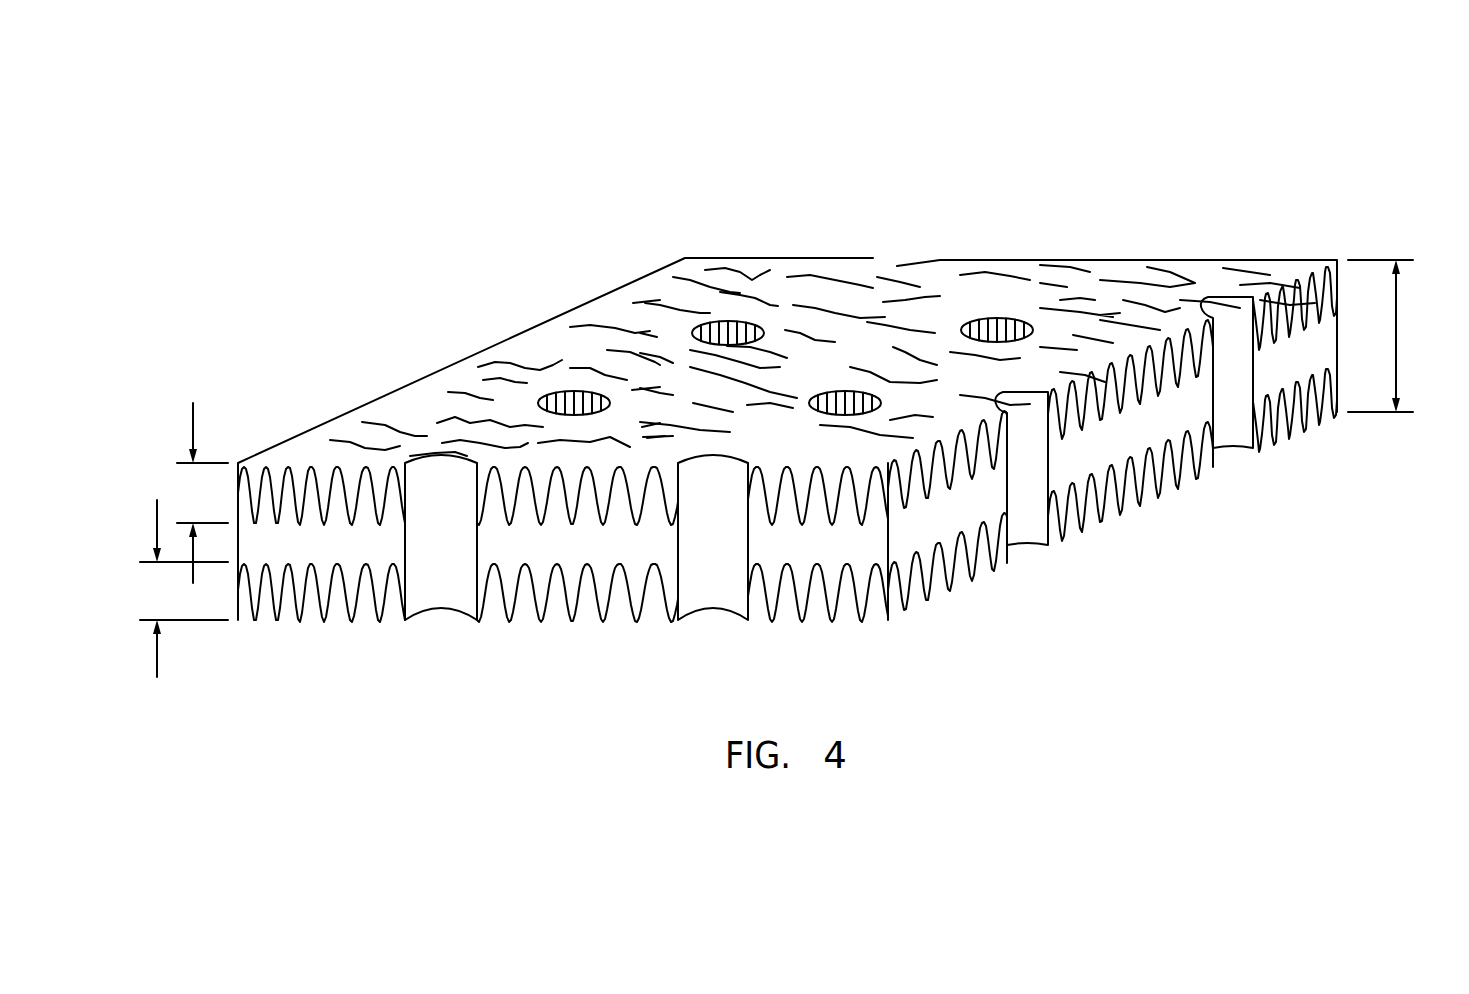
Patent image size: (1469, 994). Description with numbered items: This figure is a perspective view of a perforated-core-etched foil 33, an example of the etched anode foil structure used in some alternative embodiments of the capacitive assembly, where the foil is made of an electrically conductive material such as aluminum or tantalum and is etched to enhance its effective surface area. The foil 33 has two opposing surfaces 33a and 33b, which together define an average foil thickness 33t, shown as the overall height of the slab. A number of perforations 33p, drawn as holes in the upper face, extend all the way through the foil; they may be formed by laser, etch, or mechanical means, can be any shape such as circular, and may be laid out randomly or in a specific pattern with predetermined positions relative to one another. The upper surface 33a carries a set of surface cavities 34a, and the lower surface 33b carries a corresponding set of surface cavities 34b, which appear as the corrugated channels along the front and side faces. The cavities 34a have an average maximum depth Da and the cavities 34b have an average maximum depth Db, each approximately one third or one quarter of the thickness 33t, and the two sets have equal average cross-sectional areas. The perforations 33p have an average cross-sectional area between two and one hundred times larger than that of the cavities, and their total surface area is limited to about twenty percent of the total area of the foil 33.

The perforated-core-etched foil 33 is at (1221, 100).
The first opposing surface 33a is at (550, 332).
The second opposing surface 33b is at (590, 607).
The perforations 33p is at (897, 266).
The average foil thickness 33t is at (1402, 333).
The surface cavities 34a is at (1160, 343).
The surface cavities 34b is at (1145, 490).
The average maximum depth Da is at (187, 422).
The average maximum depth Db is at (162, 657).